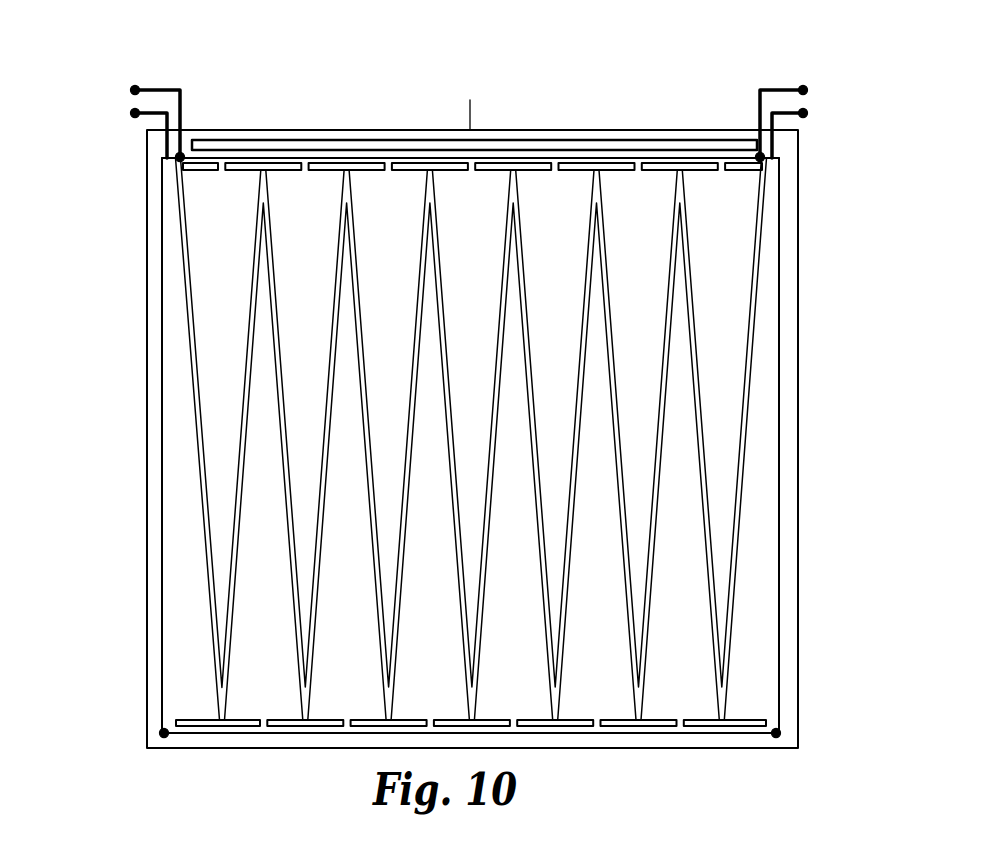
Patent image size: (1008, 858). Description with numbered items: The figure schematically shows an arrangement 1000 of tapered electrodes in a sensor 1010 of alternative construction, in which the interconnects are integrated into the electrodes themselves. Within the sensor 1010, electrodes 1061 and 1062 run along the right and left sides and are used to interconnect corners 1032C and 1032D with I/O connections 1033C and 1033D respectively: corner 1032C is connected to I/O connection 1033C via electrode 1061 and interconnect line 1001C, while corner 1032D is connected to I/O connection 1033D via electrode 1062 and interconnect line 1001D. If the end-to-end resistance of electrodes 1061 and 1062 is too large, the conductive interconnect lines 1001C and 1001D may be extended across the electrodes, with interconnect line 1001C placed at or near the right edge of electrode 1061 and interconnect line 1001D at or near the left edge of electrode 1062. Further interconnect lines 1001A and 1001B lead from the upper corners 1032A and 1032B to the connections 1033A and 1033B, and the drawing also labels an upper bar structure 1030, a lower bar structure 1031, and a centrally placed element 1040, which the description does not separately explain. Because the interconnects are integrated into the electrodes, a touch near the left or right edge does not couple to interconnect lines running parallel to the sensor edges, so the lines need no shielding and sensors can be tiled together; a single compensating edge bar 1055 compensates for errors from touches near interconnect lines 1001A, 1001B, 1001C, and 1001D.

The heater assembly 1000 is at (643, 64).
The sensor 1010 is at (148, 243).
The upper bus bar segments 1030 is at (370, 163).
The lower bus bar segments 1031 is at (628, 732).
The bus bar connection point A 1032A is at (183, 150).
The bus bar connection point B 1032B is at (758, 150).
The corner 1032C is at (777, 733).
The corner 1032D is at (163, 733).
The terminal A 1033A is at (135, 90).
The terminal B 1033B is at (803, 90).
The I/O connection 1033C is at (803, 113).
The I/O connection 1033D is at (135, 113).
The interconnect line 1001A is at (183, 108).
The interconnect line 1001B is at (758, 108).
The interconnect line 1001C is at (778, 118).
The interconnect line 1001D is at (165, 122).
The centerline / axis 1040 is at (470, 100).
The compensating edge bar 1055 is at (552, 142).
The electrode 1061 is at (762, 543).
The electrode 1062 is at (177, 462).